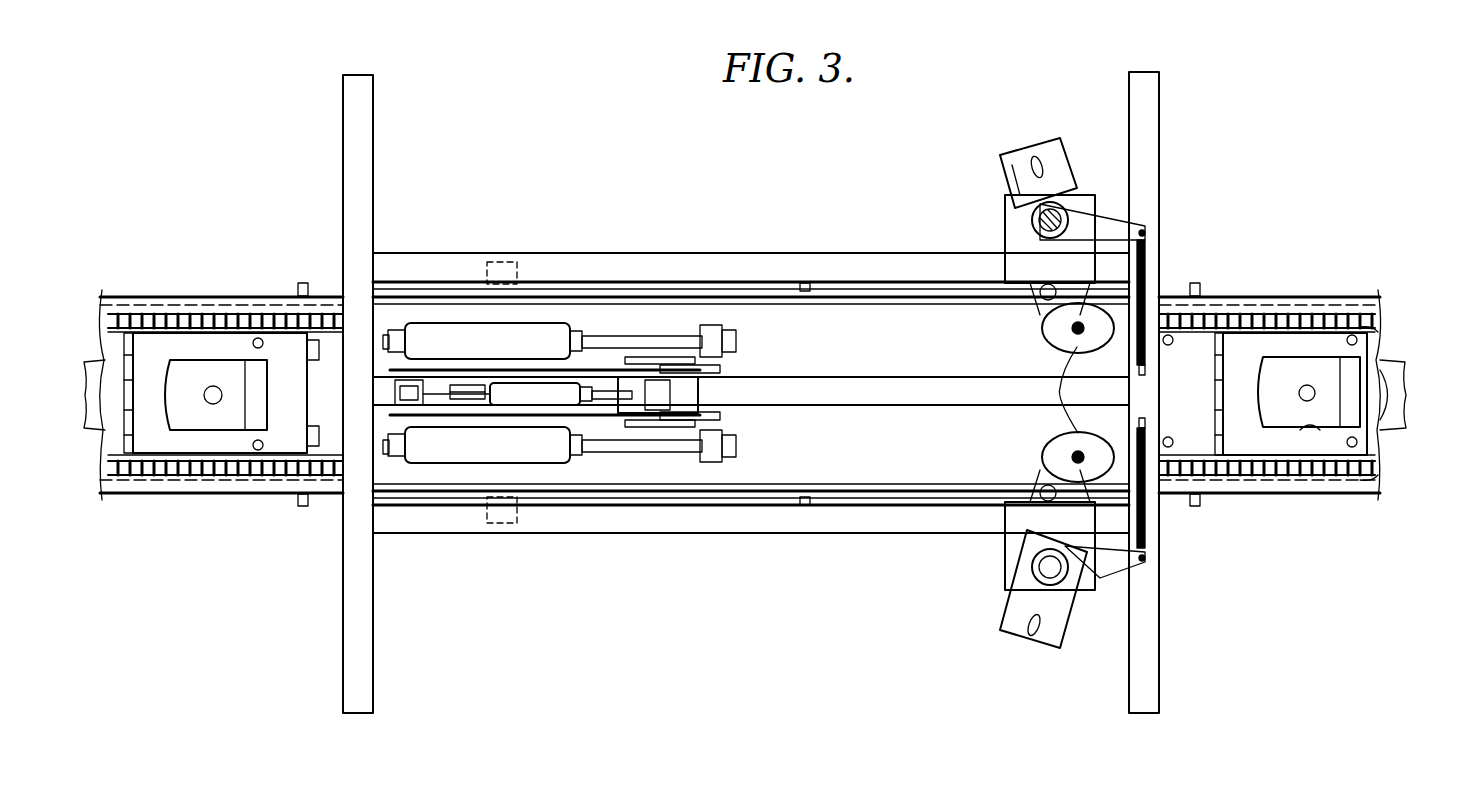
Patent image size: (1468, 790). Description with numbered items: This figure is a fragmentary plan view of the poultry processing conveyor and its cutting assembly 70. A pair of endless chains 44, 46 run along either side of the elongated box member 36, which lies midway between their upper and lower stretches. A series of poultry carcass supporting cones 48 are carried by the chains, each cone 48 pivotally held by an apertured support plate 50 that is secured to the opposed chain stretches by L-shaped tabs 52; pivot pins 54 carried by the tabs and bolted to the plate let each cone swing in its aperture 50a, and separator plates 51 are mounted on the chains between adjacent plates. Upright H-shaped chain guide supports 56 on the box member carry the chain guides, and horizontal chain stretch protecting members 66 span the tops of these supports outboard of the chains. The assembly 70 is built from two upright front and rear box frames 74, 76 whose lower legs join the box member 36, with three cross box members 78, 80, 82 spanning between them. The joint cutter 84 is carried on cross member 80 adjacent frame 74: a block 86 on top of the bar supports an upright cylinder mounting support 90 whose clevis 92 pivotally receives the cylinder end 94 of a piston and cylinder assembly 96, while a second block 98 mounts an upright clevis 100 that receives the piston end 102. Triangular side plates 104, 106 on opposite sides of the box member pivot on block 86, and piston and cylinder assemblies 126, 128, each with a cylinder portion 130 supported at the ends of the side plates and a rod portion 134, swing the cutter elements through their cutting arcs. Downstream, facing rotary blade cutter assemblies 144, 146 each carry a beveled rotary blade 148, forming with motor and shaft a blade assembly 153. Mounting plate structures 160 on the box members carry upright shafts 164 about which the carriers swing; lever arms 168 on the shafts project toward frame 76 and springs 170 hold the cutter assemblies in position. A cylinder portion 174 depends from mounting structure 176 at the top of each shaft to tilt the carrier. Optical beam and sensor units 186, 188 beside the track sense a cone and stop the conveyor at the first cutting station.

The box member 36 is at (90, 377).
The endless chain 44 is at (150, 480).
The endless chain 46 is at (127, 302).
The poultry carcass supporting cone 48 is at (208, 428).
The apertured support plate 50 is at (197, 347).
The aperture 50a is at (1320, 432).
The separator plate 51 is at (107, 427).
The L-shaped tab 52 is at (1360, 330).
The pivot pin 54 is at (1393, 437).
The H-shaped chain guide support 56 is at (805, 302).
The chain stretch protecting member 66 is at (237, 302).
The assembly 70 is at (694, 128).
The front box frame 74 is at (348, 622).
The rear box frame 76 is at (1153, 643).
The box member 78 is at (840, 520).
The box member 80 is at (858, 392).
The box member 82 is at (742, 265).
The joint cutter 84 is at (624, 522).
The block 86 is at (492, 375).
The cylinder mounting support 90 is at (420, 395).
The clevis 92 is at (463, 383).
The cylinder end 94 is at (498, 400).
The piston and cylinder assembly 96 is at (513, 413).
The block 98 is at (700, 398).
The upright clevis 100 is at (700, 417).
The piston end 102 is at (623, 427).
The triangular side plate 104 is at (603, 420).
The triangular side plate 106 is at (598, 345).
The piston and cylinder assembly 126 is at (440, 472).
The piston and cylinder assembly 128 is at (437, 318).
The cylinder portion 130 is at (553, 333).
The rod portion 134 is at (590, 340).
The rotary blade cutter assembly 144 is at (1005, 645).
The rotary blade cutter assembly 146 is at (1057, 130).
The rotary blade 148 is at (1047, 390).
The blade assembly 153 is at (1030, 320).
The mounting plate structure 160 is at (1013, 253).
The upright shaft 164 is at (1033, 221).
The lever arm 168 is at (1137, 222).
The spring 170 is at (1150, 273).
The cylinder portion 174 is at (1033, 158).
The mounting structure 176 is at (1012, 165).
The optical beam and sensor unit 186 is at (518, 500).
The optical beam and sensor unit 188 is at (505, 290).